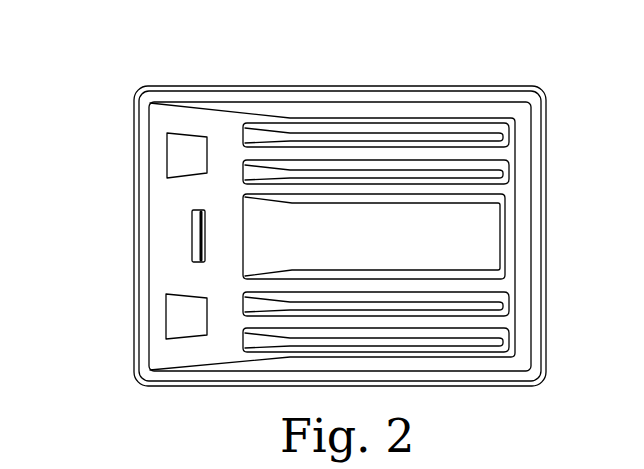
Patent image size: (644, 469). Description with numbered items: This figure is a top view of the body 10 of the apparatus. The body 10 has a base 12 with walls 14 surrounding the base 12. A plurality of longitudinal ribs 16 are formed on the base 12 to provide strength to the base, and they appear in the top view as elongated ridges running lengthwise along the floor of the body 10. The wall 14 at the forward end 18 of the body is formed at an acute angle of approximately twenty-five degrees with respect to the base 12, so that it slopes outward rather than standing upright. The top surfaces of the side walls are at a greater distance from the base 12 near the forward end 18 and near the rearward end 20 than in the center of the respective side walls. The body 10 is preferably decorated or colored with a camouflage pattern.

The body 10 is at (58, 56).
The base 12 is at (480, 152).
The walls 14 is at (184, 86).
The longitudinal ribs 16 is at (251, 355).
The forward end 18 is at (133, 244).
The rearward end 20 is at (548, 192).